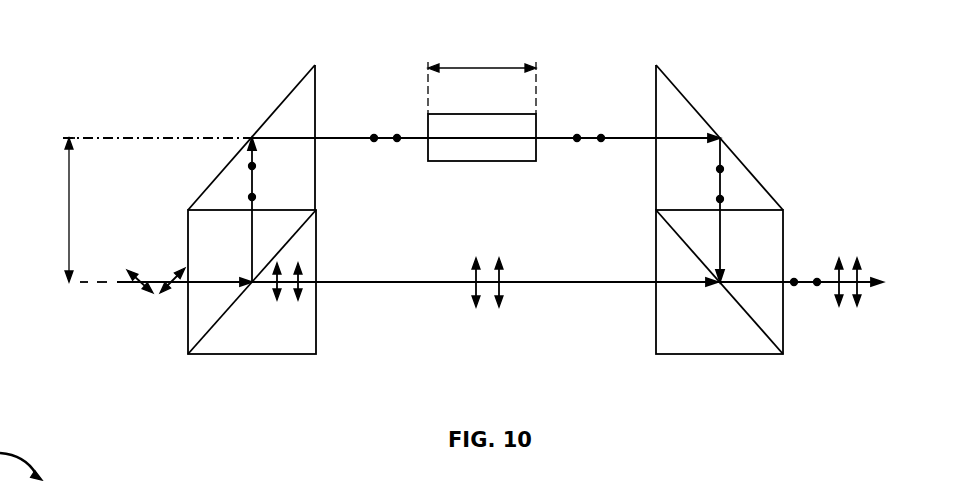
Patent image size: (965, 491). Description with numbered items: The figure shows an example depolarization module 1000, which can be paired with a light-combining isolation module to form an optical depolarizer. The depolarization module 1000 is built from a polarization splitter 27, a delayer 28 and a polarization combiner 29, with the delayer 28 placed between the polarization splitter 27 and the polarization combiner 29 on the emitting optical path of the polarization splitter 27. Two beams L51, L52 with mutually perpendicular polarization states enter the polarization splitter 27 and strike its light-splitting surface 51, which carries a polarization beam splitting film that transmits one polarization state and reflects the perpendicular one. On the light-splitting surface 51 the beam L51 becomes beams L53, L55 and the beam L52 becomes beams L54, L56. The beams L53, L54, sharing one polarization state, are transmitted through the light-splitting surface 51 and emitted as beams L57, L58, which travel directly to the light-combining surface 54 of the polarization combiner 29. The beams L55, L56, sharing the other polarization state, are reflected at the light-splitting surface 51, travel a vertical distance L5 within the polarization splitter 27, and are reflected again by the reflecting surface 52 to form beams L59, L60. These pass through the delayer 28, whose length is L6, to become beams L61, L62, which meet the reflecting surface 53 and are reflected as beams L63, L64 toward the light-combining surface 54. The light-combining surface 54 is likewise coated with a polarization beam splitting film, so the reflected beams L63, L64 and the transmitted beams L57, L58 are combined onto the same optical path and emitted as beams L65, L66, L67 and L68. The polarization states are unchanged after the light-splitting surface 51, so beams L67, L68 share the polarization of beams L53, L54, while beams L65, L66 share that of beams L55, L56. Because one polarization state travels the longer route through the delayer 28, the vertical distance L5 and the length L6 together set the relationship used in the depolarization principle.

The depolarization module 1000 is at (138, 76).
The polarization splitter 27 is at (214, 346).
The delayer 28 is at (498, 153).
The polarization combiner 29 is at (737, 346).
The light-splitting surface 51 is at (223, 310).
The reflecting surface 52 is at (283, 102).
The reflecting surface 53 is at (698, 112).
The light-combining surface 54 is at (737, 303).
The vertical distance L5 is at (80, 210).
The length of the delayer L6 is at (482, 79).
The beam L51 is at (135, 283).
The beam L52 is at (165, 283).
The beam L53 is at (271, 288).
The beam L54 is at (310, 278).
The beam L55 is at (249, 188).
The beam L56 is at (251, 176).
The beam L57 is at (467, 282).
The beam L58 is at (503, 282).
The beam L59 is at (354, 137).
The beam L60 is at (417, 139).
The beam L61 is at (585, 137).
The beam L62 is at (622, 139).
The reflected beam L63 is at (721, 157).
The reflected beam L64 is at (721, 188).
The beam L65 is at (790, 280).
The beam L66 is at (810, 285).
The beam L67 is at (837, 275).
The beam L68 is at (863, 295).